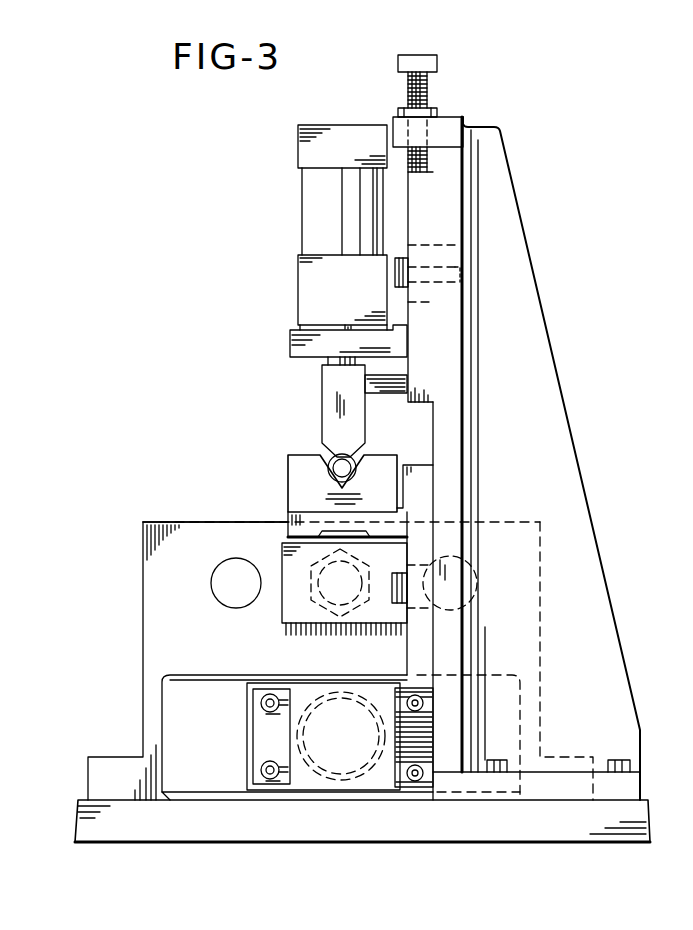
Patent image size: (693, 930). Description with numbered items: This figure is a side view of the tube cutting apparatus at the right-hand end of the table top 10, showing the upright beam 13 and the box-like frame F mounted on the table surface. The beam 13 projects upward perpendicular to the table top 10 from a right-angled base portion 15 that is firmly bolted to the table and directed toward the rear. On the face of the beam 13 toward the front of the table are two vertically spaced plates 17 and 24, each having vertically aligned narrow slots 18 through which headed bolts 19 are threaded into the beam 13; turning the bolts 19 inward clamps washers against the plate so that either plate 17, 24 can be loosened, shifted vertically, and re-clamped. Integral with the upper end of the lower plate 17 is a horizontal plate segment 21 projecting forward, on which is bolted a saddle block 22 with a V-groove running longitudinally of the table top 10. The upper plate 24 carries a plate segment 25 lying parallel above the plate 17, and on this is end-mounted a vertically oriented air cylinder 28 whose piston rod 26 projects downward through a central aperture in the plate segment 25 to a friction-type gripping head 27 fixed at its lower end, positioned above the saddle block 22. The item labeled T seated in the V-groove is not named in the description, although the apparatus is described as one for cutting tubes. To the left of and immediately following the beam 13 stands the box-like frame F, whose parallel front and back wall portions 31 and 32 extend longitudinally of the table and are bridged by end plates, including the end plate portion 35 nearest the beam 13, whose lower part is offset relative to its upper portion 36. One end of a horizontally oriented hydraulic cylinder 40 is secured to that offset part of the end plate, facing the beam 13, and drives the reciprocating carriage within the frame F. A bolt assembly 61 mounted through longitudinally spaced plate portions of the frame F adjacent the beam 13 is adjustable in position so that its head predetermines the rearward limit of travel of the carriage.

The table top 10 is at (272, 836).
The beam 13 is at (458, 348).
The base portion 15 is at (634, 787).
The plate 17 is at (425, 490).
The slots 18 is at (468, 242).
The headed bolt 19 is at (397, 283).
The plate segment 21 is at (300, 516).
The saddle block 22 is at (300, 472).
The plate 24 is at (430, 320).
The plate segment 25 is at (305, 342).
The piston rod 26 is at (332, 362).
The gripping head 27 is at (322, 410).
The air cylinder 28 is at (336, 215).
The front wall portion 31 is at (162, 707).
The back wall portion 32 is at (540, 721).
The end plate portion 35 is at (158, 598).
The upper portion 36 is at (200, 522).
The hydraulic cylinder 40 is at (370, 739).
The bolt assembly 61 is at (296, 604).
The box-like frame F is at (138, 545).
The tube T is at (358, 460).